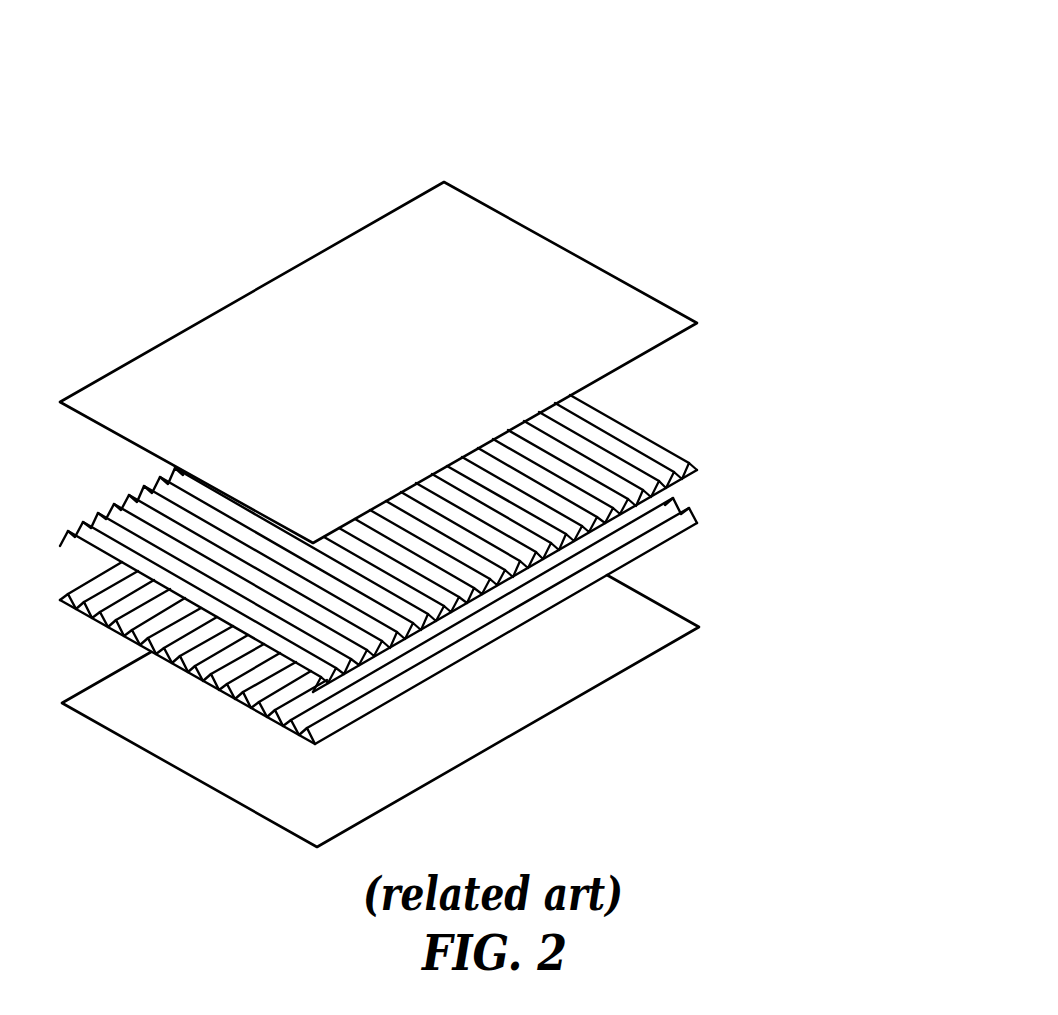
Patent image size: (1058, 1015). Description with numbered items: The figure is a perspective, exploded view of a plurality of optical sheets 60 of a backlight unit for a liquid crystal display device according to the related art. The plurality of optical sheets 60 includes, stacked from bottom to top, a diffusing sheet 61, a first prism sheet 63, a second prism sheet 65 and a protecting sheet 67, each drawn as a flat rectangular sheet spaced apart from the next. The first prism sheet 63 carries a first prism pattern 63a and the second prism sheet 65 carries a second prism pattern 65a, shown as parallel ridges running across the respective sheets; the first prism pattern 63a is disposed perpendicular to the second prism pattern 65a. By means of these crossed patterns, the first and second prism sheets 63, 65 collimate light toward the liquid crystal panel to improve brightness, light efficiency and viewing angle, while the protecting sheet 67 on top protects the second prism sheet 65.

The plurality of optical sheets 60 is at (815, 125).
The diffusing sheet 61 is at (652, 623).
The first prism sheet 63 is at (470, 580).
The first prism pattern 63a is at (688, 520).
The second prism sheet 65 is at (468, 518).
The second prism pattern 65a is at (652, 447).
The protecting sheet 67 is at (598, 307).